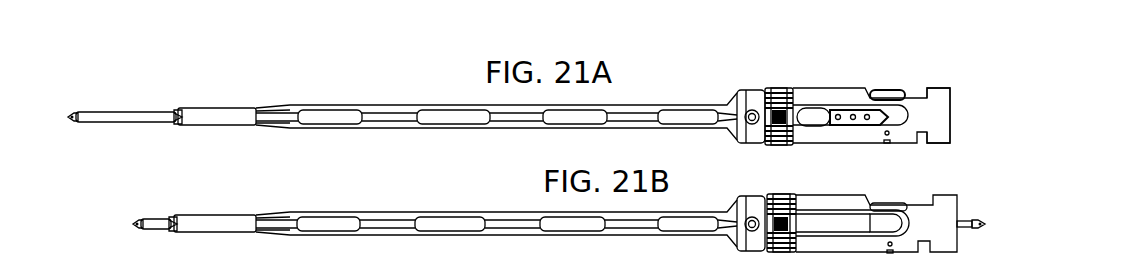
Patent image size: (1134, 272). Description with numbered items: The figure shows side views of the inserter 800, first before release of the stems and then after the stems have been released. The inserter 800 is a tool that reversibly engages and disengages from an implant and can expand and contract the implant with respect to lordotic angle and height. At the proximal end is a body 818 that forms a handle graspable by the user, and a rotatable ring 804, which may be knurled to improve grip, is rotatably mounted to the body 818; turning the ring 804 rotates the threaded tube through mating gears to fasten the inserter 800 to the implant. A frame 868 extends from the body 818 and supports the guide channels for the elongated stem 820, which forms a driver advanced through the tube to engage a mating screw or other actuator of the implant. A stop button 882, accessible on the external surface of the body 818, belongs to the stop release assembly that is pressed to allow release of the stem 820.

In FIG. 21A, the inserter 800 is at (214, 68).
In FIG. 21A, the frame 868 is at (388, 94).
In FIG. 21A, the rotatable ring 804 is at (772, 88).
In FIG. 21A, the body 818 is at (935, 92).
In FIG. 21A, the elongated stem 820 is at (98, 123).
In FIG. 21B, the elongated stem 820 is at (152, 215).
In FIG. 21B, the stop button 882 is at (893, 202).